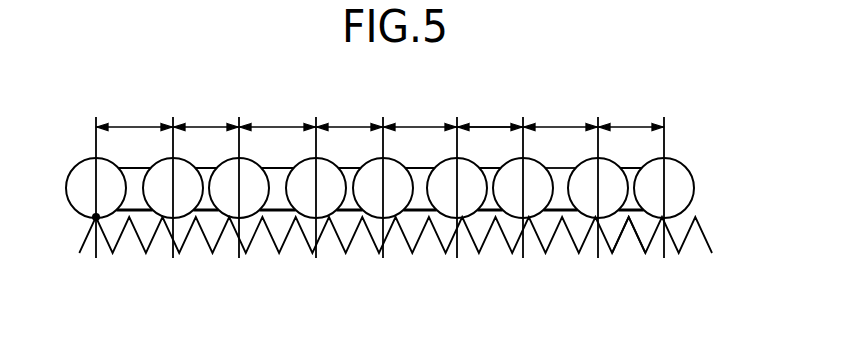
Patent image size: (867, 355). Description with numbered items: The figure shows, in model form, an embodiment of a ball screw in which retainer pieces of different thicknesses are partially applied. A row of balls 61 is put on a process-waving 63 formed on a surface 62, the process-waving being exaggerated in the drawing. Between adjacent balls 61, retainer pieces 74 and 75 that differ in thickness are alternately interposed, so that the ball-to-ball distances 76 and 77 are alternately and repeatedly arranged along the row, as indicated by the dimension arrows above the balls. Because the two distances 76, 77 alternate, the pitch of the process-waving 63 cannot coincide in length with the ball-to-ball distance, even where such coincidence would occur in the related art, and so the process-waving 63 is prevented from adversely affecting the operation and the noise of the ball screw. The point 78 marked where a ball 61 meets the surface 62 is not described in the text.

The balls 61 is at (687, 162).
The surface 62 is at (703, 233).
The process-waving 63 is at (628, 243).
The retainer piece 74 is at (630, 163).
The retainer piece 75 is at (558, 165).
The ball-to-ball distance 76 is at (487, 126).
The ball-to-ball distance 77 is at (415, 126).
The contact point 78 is at (94, 218).